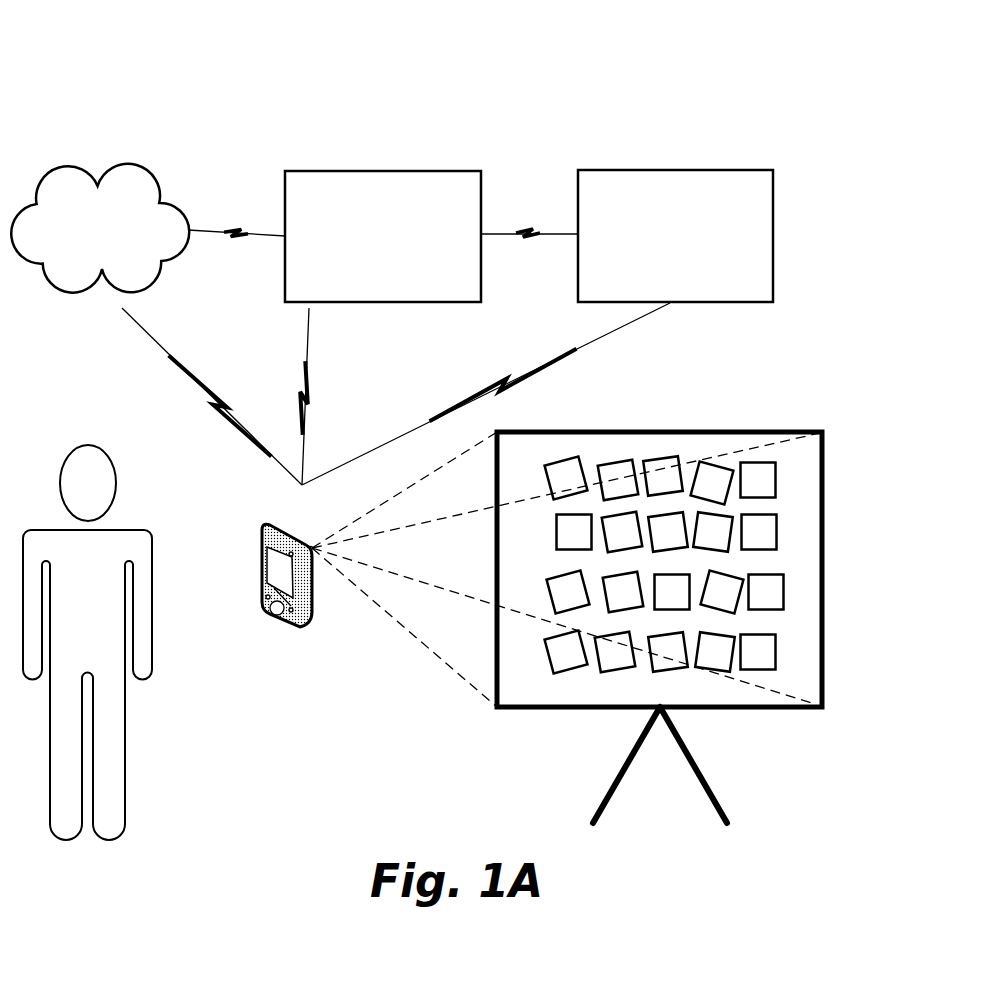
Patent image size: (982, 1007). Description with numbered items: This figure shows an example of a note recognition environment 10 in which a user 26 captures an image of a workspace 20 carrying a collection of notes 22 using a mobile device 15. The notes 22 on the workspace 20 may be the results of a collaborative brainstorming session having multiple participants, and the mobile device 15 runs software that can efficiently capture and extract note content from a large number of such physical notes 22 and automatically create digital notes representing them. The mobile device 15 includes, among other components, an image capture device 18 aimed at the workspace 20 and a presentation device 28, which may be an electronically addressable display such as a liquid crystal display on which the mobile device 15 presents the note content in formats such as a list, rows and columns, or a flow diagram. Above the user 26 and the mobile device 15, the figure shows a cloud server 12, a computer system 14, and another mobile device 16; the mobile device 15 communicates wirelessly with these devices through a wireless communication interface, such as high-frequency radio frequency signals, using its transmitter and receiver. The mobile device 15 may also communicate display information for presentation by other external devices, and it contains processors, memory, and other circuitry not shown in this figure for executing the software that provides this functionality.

The note recognition environment 10 is at (100, 80).
The cloud server 12 is at (83, 275).
The computer system 14 is at (368, 284).
The mobile device 15 is at (272, 576).
The other mobile device 16 is at (660, 281).
The image capture device 18 is at (311, 547).
The workspace 20 is at (685, 627).
The notes 22 is at (782, 474).
The user 26 is at (152, 616).
The presentation device 28 is at (267, 600).